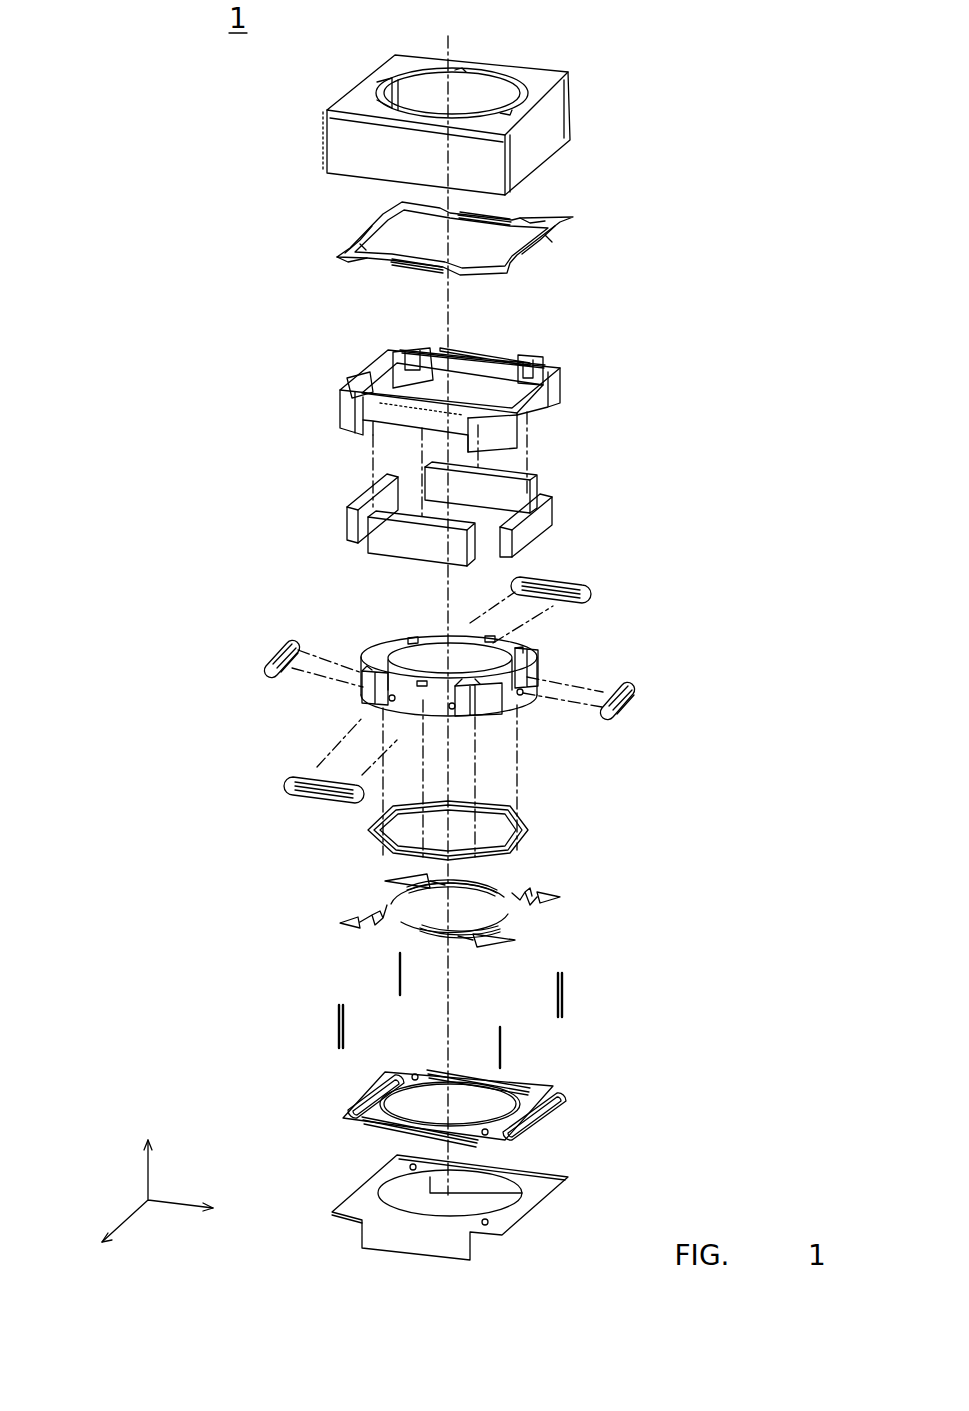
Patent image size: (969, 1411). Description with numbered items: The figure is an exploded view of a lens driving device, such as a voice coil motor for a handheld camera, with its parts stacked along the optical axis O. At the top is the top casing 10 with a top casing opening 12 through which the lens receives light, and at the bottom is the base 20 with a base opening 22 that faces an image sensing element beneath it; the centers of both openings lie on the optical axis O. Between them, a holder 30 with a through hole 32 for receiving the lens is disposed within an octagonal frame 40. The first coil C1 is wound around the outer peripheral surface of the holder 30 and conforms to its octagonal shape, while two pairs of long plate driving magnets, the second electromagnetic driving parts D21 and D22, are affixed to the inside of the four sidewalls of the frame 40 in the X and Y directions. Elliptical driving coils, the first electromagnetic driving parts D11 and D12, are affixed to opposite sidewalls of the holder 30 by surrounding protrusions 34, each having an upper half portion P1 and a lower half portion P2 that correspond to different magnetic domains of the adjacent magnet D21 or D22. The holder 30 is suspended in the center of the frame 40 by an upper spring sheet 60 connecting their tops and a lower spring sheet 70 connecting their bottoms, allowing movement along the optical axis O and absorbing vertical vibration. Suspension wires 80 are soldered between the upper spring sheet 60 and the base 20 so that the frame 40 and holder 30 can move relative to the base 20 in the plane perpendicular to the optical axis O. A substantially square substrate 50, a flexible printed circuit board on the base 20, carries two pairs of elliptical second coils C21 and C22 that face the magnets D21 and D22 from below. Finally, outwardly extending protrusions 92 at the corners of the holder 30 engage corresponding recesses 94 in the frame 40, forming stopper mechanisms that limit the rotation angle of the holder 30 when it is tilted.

The optical axis O is at (448, 598).
The top casing 10 is at (573, 107).
The top casing opening 12 is at (496, 95).
The upper spring sheet 60 is at (574, 218).
The frame 40 is at (562, 370).
The recesses 94 is at (412, 360).
The second electromagnetic driving parts D21 is at (366, 547).
The second electromagnetic driving parts D22 is at (347, 520).
The holder 30 is at (368, 697).
The through hole 32 is at (405, 663).
The protrusions 34 is at (520, 700).
The protrusions 92 is at (413, 634).
The first electromagnetic driving parts D11 is at (584, 578).
The first electromagnetic driving parts D12 is at (277, 647).
The upper half portion P1 is at (285, 783).
The lower half portion P2 is at (320, 793).
The first coil C1 is at (533, 828).
The lower spring sheet 70 is at (558, 894).
The suspension wires 80 is at (398, 966).
The substrate 50 is at (566, 1092).
The second coils C21 is at (372, 1120).
The second coils C22 is at (366, 1085).
The base 20 is at (555, 1194).
The base opening 22 is at (407, 1193).